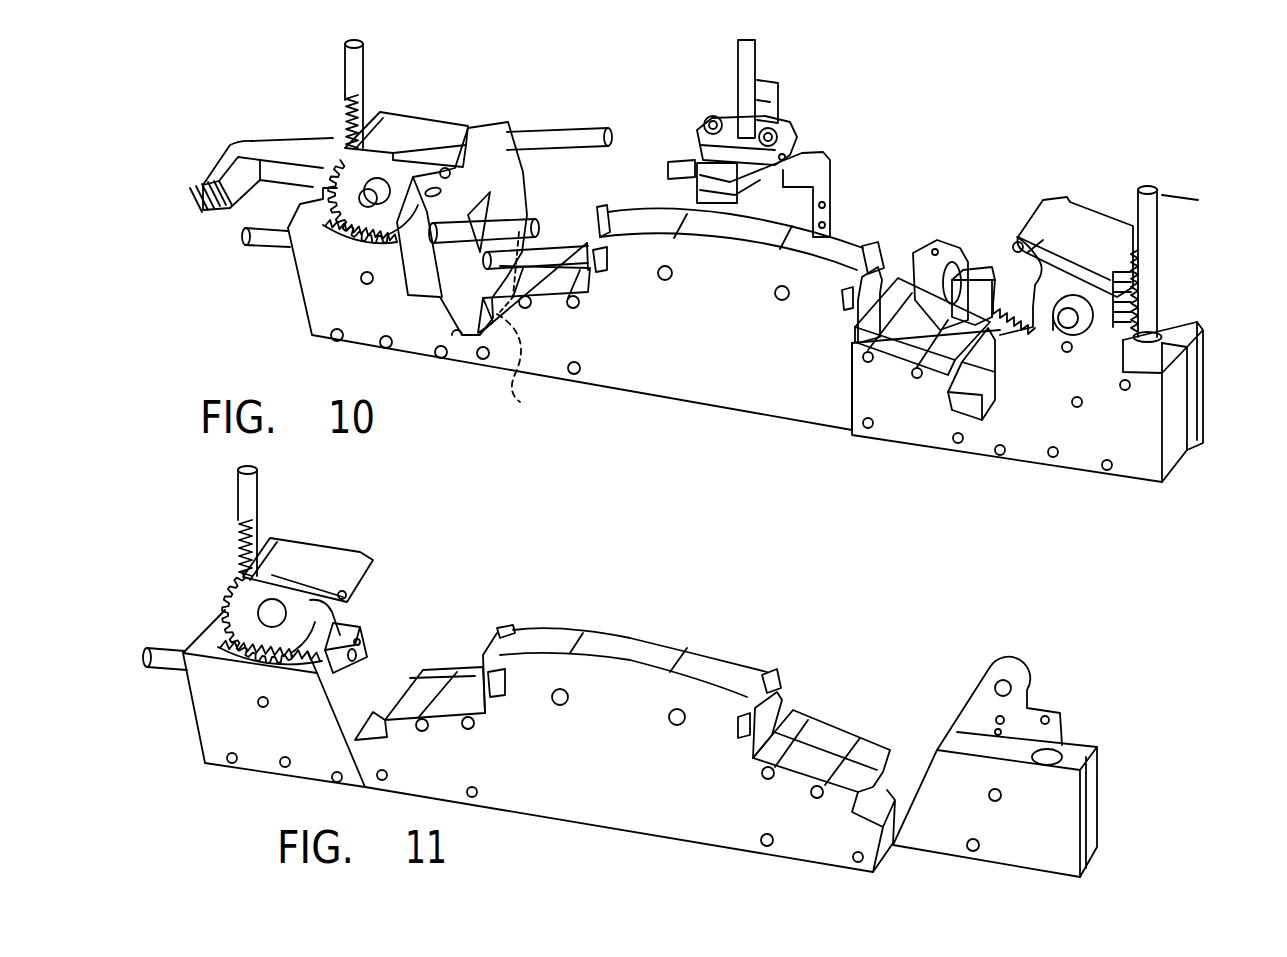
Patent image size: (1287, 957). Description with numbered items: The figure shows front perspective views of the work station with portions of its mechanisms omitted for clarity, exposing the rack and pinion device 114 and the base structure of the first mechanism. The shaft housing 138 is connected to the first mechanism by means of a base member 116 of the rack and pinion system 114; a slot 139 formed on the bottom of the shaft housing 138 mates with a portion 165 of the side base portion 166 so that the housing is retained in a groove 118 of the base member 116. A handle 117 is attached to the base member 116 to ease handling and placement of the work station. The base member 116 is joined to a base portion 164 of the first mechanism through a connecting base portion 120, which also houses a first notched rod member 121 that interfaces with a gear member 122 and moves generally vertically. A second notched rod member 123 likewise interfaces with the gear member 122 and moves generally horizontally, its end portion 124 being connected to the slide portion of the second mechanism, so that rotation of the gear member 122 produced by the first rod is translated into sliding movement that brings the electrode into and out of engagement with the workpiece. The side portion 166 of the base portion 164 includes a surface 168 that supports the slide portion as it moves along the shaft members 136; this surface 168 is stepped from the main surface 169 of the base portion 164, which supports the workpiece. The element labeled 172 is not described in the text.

In FIG. 10, the rack and pinion device 114 is at (1163, 196).
In FIG. 10, the base member 116 is at (1030, 443).
In FIG. 10, the handle 117 is at (228, 168).
In FIG. 10, the groove 118 is at (953, 408).
In FIG. 11, the connecting base portion 120 is at (1040, 827).
In FIG. 10, the first notched rod member 121 is at (1153, 257).
In FIG. 11, the first notched rod member 121 is at (247, 493).
In FIG. 10, the gear member 122 is at (1082, 215).
In FIG. 11, the gear member 122 is at (323, 553).
In FIG. 10, the second notched rod member 123 is at (1008, 307).
In FIG. 11, the second notched rod member 123 is at (307, 663).
In FIG. 10, the end portion 124 is at (982, 277).
In FIG. 11, the end portion 124 is at (345, 633).
In FIG. 10, the shaft members 136 is at (547, 132).
In FIG. 10, the shaft housing 138 is at (497, 128).
In FIG. 10, the slot 139 is at (517, 402).
In FIG. 10, the base portion 164 is at (718, 393).
In FIG. 11, the base portion 164 is at (558, 790).
In FIG. 10, the portion of side base portion 165 is at (980, 388).
In FIG. 11, the side base portion 166 is at (737, 832).
In FIG. 10, the surface 168 is at (910, 348).
In FIG. 11, the surface 168 is at (800, 763).
In FIG. 10, the main surface 169 is at (727, 236).
In FIG. 11, the main surface 169 is at (628, 652).
In FIG. 10, the stand bracket 172 is at (825, 174).